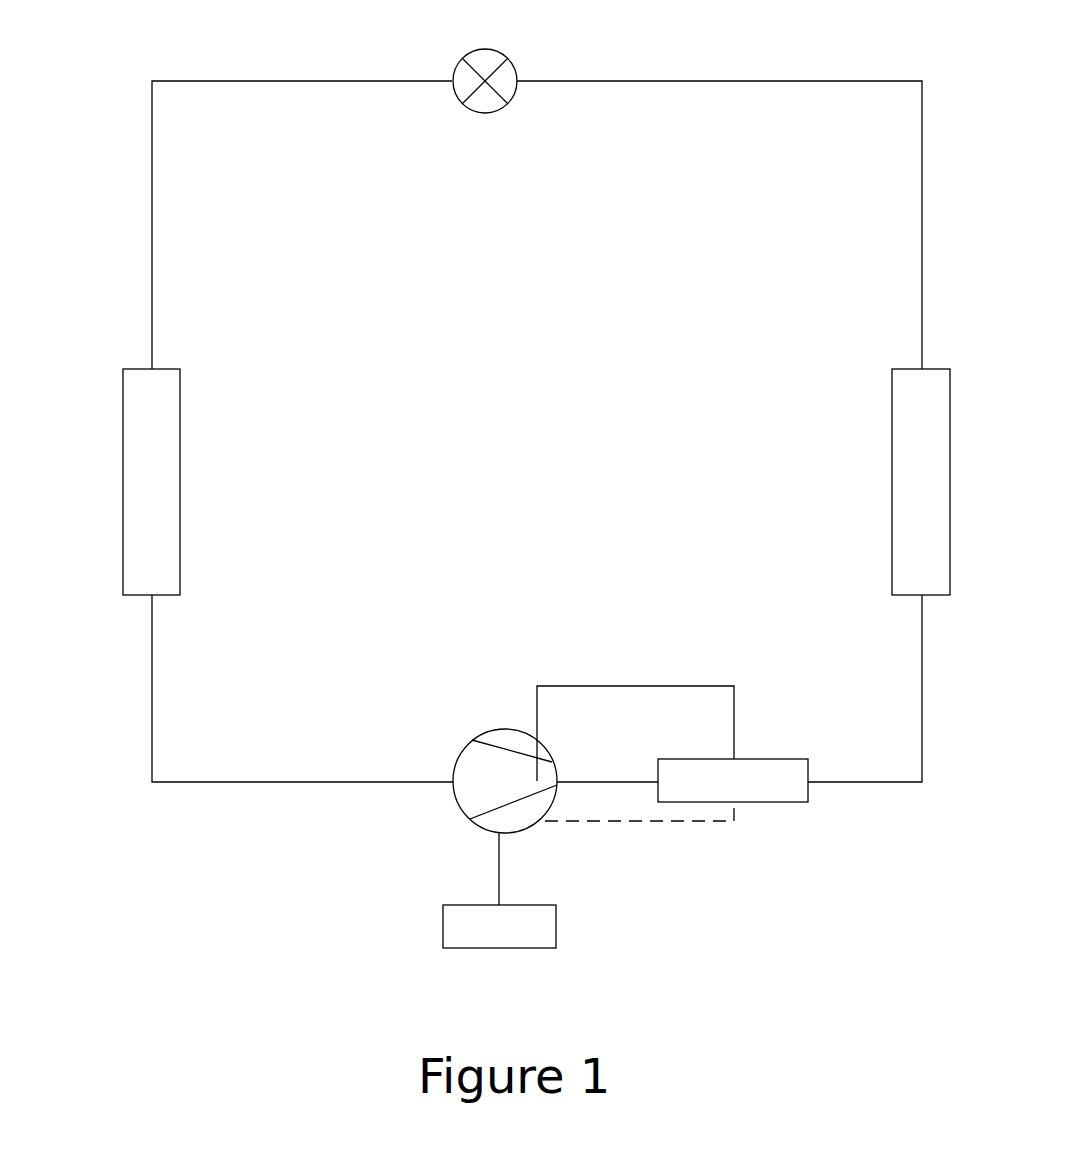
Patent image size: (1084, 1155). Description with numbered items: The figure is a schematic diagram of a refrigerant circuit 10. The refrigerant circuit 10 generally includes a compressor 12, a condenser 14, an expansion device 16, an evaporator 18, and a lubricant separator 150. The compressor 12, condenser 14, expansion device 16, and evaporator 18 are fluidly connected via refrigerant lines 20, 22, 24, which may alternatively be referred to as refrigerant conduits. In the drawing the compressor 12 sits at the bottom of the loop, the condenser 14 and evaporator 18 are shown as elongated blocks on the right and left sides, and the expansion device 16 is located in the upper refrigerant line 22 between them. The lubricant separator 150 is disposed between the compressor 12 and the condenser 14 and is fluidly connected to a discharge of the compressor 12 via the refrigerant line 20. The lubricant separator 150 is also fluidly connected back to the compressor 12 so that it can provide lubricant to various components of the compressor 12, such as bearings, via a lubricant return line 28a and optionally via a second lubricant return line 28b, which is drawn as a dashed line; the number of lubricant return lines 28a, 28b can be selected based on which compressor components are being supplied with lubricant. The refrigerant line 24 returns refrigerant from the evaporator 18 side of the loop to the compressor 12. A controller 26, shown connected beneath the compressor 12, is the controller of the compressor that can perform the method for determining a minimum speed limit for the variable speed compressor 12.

The refrigerant circuit 10 is at (96, 87).
The compressor 12 is at (503, 728).
The condenser 14 is at (891, 478).
The expansion device 16 is at (484, 112).
The evaporator 18 is at (180, 483).
The refrigerant line 20 is at (600, 781).
The refrigerant line 22 is at (152, 197).
The refrigerant line 24 is at (236, 781).
The controller 26 is at (513, 939).
The lubricant return line 28a is at (735, 704).
The second lubricant return line 28b is at (622, 822).
The lubricant separator 150 is at (753, 793).